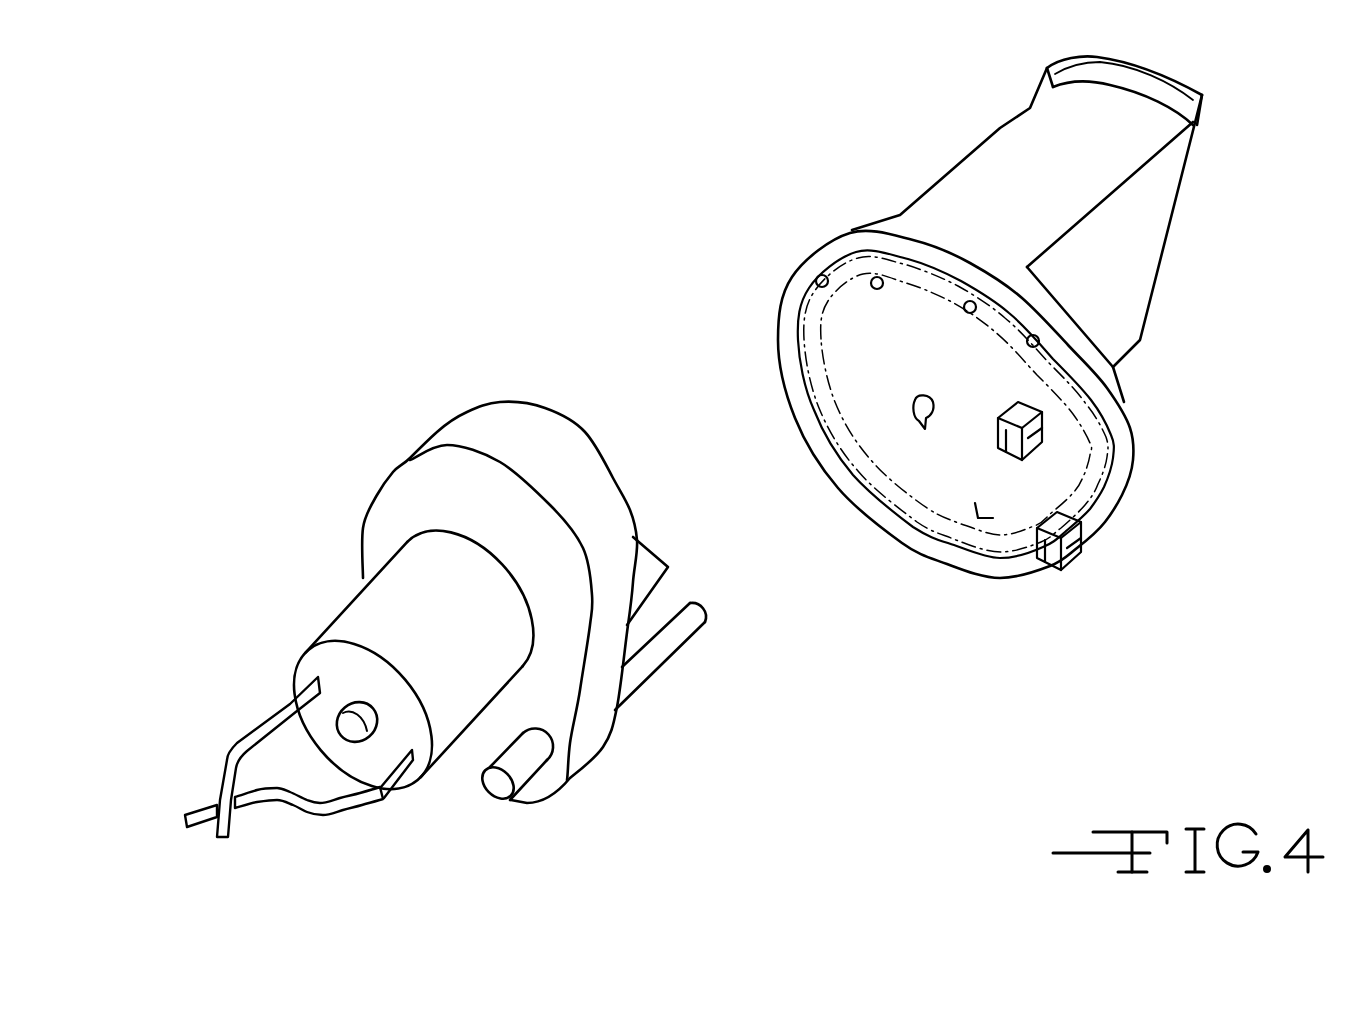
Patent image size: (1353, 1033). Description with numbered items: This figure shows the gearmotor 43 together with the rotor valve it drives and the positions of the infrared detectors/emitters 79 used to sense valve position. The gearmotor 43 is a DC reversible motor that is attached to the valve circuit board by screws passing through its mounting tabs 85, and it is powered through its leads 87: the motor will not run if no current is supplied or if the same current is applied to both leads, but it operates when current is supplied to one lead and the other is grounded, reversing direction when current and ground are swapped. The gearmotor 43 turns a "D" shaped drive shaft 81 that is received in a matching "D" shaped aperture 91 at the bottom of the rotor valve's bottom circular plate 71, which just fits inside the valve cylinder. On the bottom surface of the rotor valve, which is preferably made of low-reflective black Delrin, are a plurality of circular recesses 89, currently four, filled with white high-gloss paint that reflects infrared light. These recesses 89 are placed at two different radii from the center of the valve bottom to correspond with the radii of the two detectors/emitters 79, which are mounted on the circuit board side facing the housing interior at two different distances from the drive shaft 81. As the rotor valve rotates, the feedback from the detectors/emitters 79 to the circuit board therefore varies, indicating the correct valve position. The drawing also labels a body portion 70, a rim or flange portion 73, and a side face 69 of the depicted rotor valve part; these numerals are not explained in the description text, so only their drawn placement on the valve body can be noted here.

The gearmotor 43 is at (440, 427).
The mounting tabs 85 is at (652, 499).
The leads 87 is at (288, 707).
The "D" shaped drive shaft 81 is at (664, 691).
The circular recesses 89 is at (1031, 336).
The cup body 70 is at (970, 147).
The flange 73 is at (1182, 77).
The flat face 69 is at (1160, 195).
The infrared light detectors/emitters 79 is at (1083, 530).
The "D" shaped aperture 91 is at (923, 427).
The bottom circular plate 71 is at (977, 507).